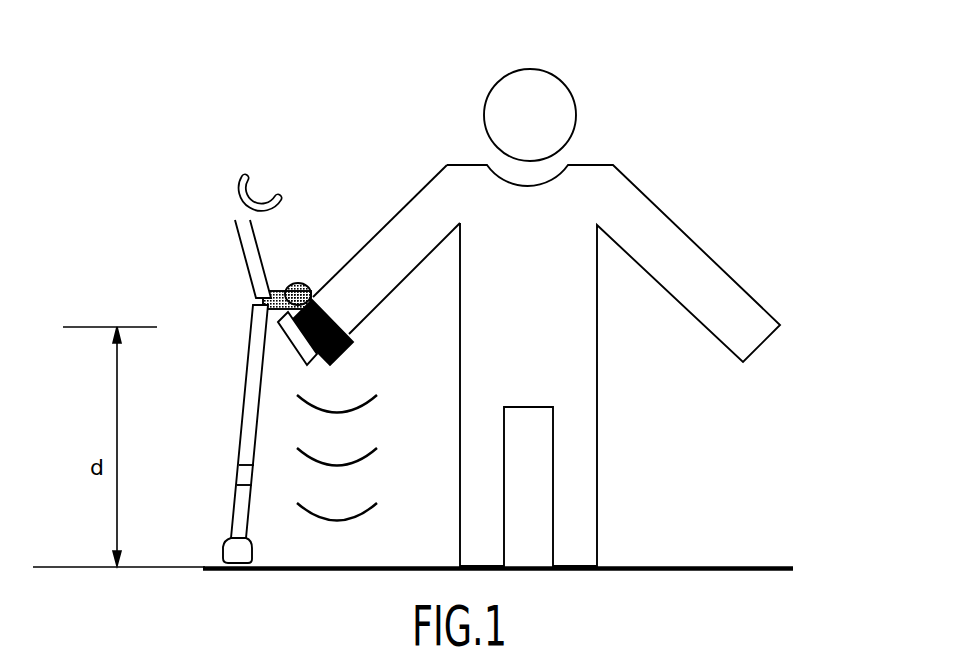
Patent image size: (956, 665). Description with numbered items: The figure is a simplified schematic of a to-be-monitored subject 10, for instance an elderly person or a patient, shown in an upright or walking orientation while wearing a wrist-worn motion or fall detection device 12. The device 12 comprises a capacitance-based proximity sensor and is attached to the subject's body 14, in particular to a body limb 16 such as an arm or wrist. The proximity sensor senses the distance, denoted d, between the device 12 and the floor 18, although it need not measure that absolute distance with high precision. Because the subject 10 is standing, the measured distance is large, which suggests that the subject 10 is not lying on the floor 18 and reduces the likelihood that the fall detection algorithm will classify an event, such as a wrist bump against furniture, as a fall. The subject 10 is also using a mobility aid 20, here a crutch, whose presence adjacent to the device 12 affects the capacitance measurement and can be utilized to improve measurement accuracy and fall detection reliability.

The subject 10 is at (546, 289).
The fall detection device 12 is at (298, 344).
The body 14 is at (513, 250).
The body limb 16 is at (372, 273).
The floor 18 is at (722, 578).
The mobility aid 20 is at (244, 247).